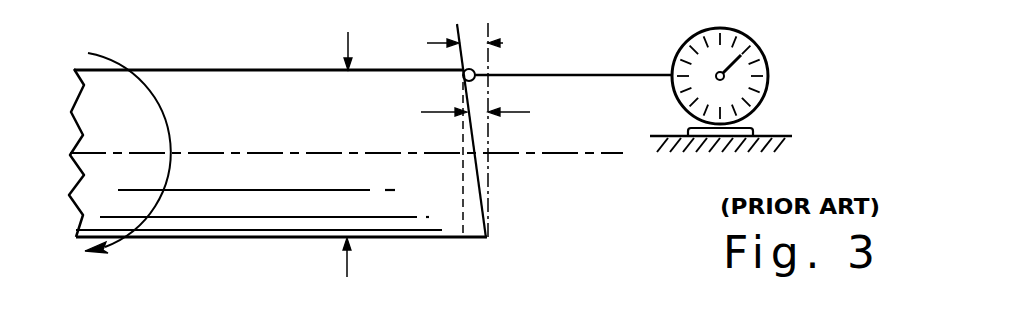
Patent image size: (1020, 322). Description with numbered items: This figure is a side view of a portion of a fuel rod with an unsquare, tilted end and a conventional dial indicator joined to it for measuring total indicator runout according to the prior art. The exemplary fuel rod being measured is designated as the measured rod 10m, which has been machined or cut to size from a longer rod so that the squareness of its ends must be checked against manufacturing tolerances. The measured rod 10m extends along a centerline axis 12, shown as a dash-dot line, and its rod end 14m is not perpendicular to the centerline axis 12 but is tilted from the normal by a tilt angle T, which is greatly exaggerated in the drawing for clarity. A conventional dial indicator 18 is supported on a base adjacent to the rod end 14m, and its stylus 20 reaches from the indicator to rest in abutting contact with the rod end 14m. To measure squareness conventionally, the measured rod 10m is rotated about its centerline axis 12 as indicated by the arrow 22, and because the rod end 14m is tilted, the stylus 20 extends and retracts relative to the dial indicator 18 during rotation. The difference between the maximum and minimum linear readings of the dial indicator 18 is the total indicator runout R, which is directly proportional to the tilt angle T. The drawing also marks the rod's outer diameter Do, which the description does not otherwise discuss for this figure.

The measured fuel rod 10m is at (218, 64).
The centerline axis 12 is at (281, 153).
The rod end 14m is at (487, 238).
The dial indicator 18 is at (761, 46).
The stylus 20 is at (594, 74).
The arrow 22 is at (88, 53).
The tilt angle T is at (503, 43).
The total indicator runout R is at (506, 112).
The outer diameter dimension Do is at (347, 263).